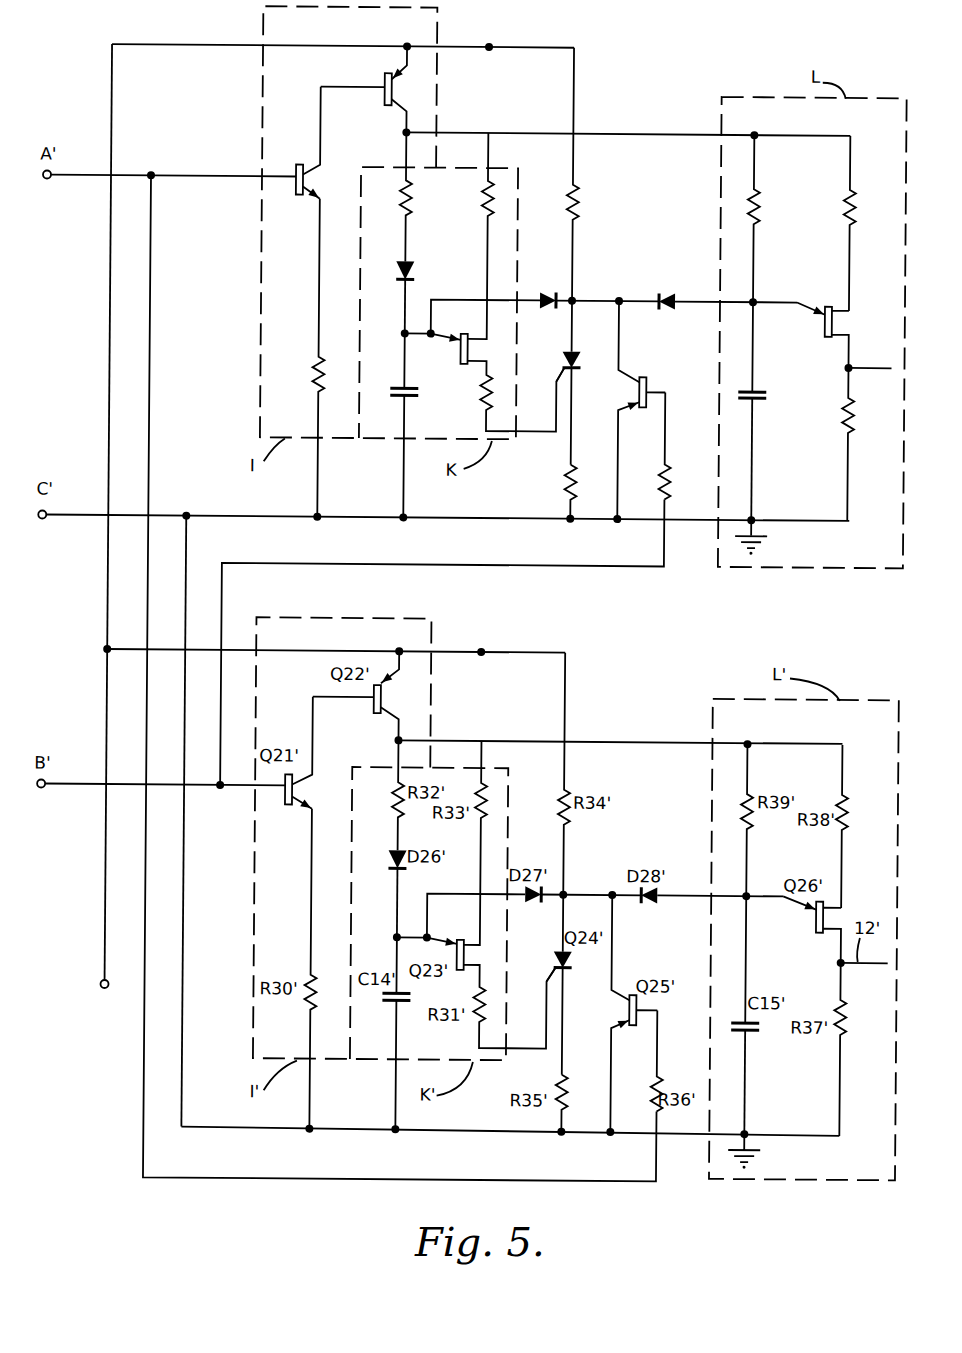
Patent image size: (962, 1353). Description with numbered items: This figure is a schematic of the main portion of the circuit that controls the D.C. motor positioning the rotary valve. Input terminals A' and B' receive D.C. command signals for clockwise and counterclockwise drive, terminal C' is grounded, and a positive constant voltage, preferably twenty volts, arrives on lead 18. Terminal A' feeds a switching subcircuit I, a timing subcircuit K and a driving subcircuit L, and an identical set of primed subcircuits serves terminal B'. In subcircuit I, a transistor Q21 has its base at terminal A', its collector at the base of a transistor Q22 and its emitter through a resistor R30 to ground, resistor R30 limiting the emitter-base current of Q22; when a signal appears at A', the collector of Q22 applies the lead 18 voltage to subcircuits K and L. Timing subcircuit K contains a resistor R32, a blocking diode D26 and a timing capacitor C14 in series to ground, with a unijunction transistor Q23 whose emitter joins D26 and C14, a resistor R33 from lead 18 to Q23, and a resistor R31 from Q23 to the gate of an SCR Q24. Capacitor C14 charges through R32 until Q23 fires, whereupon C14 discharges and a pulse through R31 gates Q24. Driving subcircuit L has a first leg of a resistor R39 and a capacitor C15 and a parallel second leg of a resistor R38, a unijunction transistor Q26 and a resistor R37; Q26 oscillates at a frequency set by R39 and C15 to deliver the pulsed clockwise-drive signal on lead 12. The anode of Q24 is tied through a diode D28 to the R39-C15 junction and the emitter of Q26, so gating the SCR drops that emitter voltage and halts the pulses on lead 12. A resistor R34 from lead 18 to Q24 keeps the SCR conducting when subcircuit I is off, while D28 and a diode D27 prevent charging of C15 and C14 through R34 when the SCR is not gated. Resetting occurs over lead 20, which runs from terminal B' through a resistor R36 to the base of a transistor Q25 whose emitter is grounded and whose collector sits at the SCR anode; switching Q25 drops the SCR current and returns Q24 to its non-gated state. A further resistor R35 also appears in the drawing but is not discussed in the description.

The lead 12 is at (865, 364).
The lead 18 is at (107, 944).
The lead 20 is at (527, 564).
The transistor Q21 is at (295, 142).
The transistor Q22 is at (363, 89).
The unijunction transistor Q23 is at (433, 348).
The SCR Q24 is at (554, 382).
The transistor Q25 is at (650, 410).
The unijunction transistor Q26 is at (818, 334).
The resistor R30 is at (296, 357).
The resistor R31 is at (506, 396).
The resistor R32 is at (424, 196).
The resistor R33 is at (470, 236).
The resistor R34 is at (591, 174).
The resistor R35 is at (548, 491).
The resistor R36 is at (681, 445).
The resistor R37 is at (828, 444).
The resistor R38 is at (832, 223).
The resistor R39 is at (775, 263).
The timing capacitor C14 is at (392, 425).
The capacitor C15 is at (767, 453).
The blocking diode D26 is at (426, 295).
The diode D27 is at (545, 289).
The diode D28 is at (670, 290).